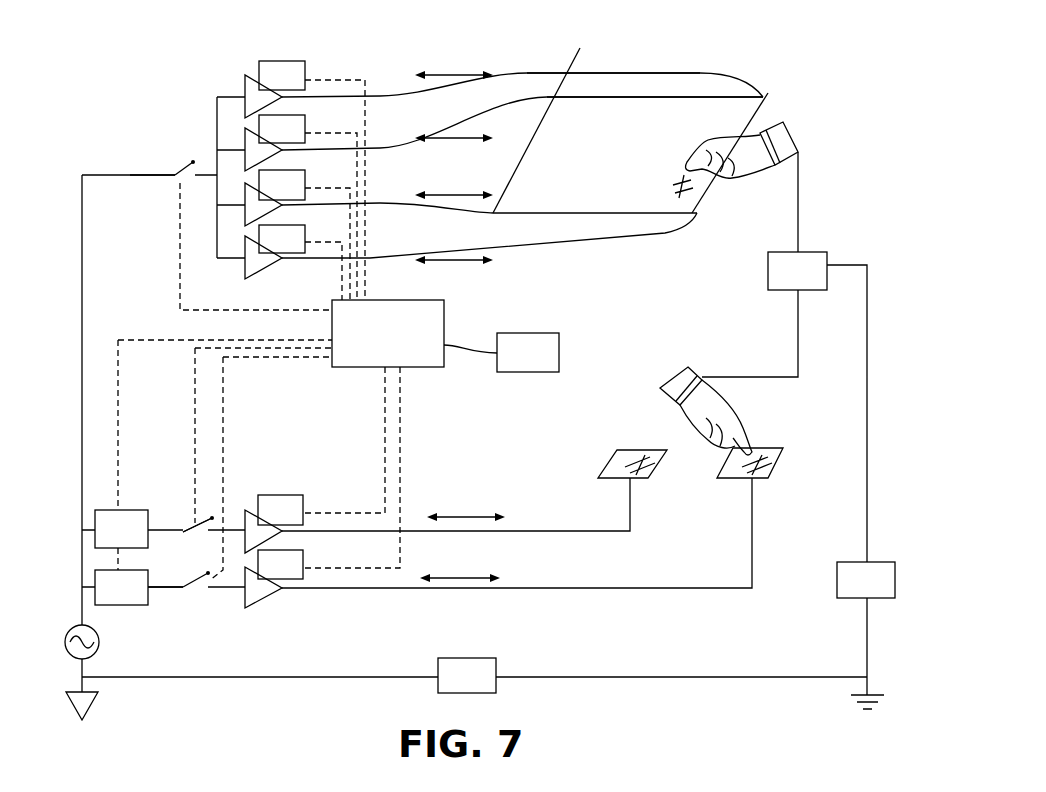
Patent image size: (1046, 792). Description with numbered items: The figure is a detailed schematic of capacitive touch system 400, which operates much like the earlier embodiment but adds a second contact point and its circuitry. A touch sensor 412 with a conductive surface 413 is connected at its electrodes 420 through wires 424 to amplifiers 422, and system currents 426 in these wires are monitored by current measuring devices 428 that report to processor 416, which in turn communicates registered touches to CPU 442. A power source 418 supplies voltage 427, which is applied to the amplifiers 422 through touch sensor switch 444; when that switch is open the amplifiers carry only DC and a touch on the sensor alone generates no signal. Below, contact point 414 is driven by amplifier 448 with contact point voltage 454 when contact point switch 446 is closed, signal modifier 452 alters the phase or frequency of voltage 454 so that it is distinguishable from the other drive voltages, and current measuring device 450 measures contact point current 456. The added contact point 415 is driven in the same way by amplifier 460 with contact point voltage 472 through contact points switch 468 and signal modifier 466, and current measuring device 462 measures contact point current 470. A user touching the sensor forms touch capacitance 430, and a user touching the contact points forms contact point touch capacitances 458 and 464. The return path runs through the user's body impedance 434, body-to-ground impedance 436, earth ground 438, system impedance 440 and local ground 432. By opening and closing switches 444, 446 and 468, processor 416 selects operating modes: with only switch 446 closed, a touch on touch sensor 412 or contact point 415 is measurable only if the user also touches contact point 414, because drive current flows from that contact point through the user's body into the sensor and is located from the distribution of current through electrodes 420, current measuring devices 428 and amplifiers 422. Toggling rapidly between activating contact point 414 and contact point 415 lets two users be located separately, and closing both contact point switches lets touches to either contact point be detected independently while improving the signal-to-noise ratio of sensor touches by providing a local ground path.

The touch system 400 is at (200, 58).
The touch sensor 412 is at (689, 116).
The conductive surface 413 is at (625, 112).
The contact point 414 is at (760, 479).
The contact point 415 is at (645, 479).
The processor 416 is at (373, 346).
The power source 418 is at (63, 637).
The electrodes 420 is at (698, 250).
The amplifiers 422 is at (276, 102).
The wires 424 is at (381, 97).
The system currents 426 is at (448, 72).
The voltage 427 is at (143, 173).
The current measuring devices 428 is at (267, 87).
The touch capacitance 430 is at (704, 202).
The local ground 432 is at (94, 702).
The body impedance 434 is at (782, 282).
The body-to-ground impedance 436 is at (851, 591).
The earth ground 438 is at (855, 696).
The system impedance 440 is at (452, 687).
The CPU 442 is at (513, 364).
The touch sensor switch 444 is at (178, 187).
The contact point switch 446 is at (193, 590).
The amplifier 448 is at (284, 591).
The current measuring device 450 is at (295, 576).
The signal modifier 452 is at (106, 599).
The contact point voltage 454 is at (168, 590).
The contact point current 456 is at (455, 578).
The contact point touch capacitance 458 is at (774, 447).
The amplifier 460 is at (284, 534).
The current measuring device 462 is at (295, 521).
The contact point touch capacitance 464 is at (634, 450).
The signal modifier 466 is at (106, 540).
The contact points switch 468 is at (203, 528).
The contact point current 470 is at (460, 516).
The contact point voltage 472 is at (162, 530).